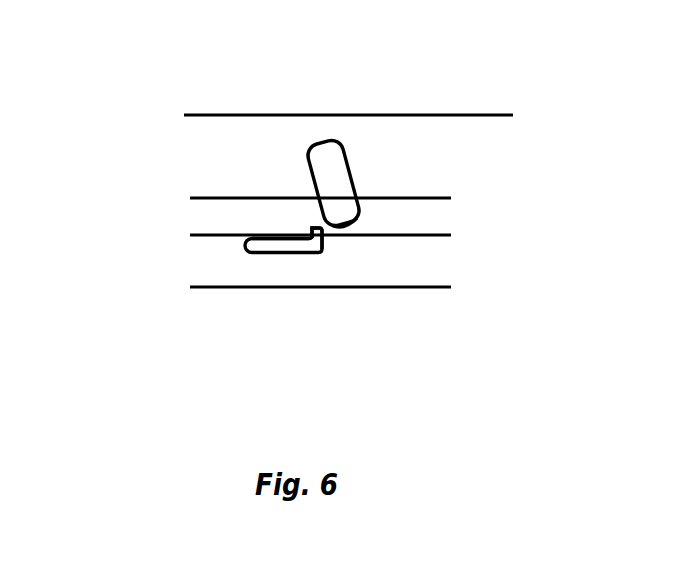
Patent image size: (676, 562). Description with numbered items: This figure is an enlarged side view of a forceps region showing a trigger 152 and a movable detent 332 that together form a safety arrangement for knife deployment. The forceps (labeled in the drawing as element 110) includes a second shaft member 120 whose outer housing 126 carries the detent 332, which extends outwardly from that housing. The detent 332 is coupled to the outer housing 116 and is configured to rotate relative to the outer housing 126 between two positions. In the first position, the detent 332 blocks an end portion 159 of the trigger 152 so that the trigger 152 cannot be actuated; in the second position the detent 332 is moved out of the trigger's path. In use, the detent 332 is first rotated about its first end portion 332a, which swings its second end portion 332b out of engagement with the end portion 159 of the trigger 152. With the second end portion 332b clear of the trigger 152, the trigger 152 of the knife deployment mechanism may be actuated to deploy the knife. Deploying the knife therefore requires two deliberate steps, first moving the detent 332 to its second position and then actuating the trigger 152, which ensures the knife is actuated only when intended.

The vehicle door assembly 110 is at (243, 110).
The outer housing 116 is at (217, 148).
The second shaft member 120 is at (241, 290).
The outer housing 126 is at (240, 261).
The trigger 152 is at (350, 164).
The end portion 159 is at (355, 217).
The detent 332 is at (289, 257).
The first end portion 332a is at (288, 237).
The second end portion 332b is at (323, 240).